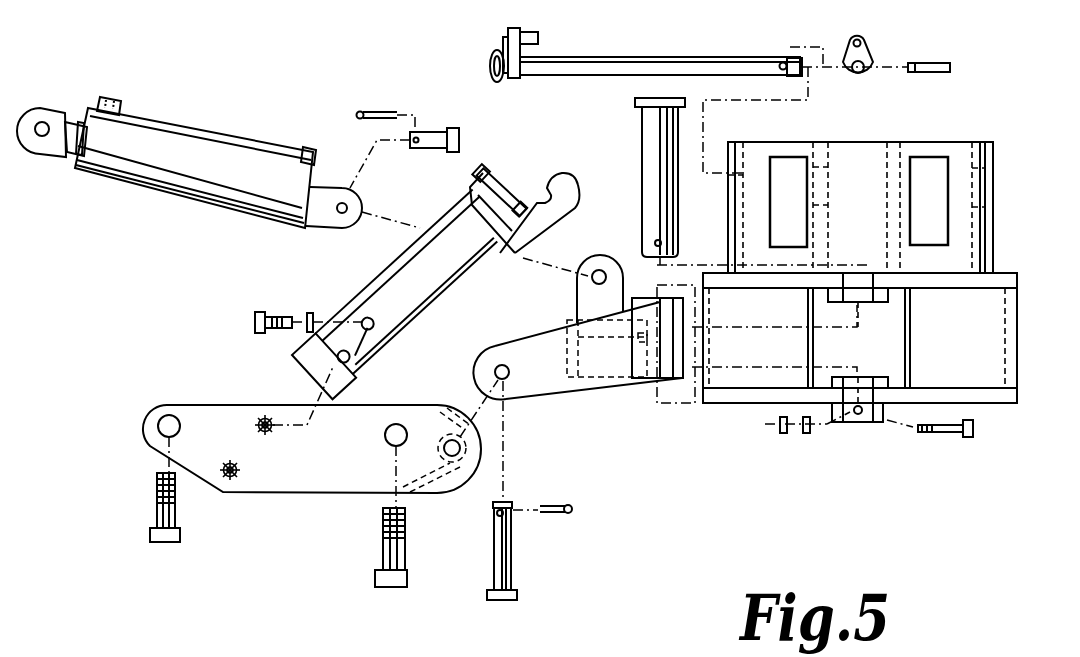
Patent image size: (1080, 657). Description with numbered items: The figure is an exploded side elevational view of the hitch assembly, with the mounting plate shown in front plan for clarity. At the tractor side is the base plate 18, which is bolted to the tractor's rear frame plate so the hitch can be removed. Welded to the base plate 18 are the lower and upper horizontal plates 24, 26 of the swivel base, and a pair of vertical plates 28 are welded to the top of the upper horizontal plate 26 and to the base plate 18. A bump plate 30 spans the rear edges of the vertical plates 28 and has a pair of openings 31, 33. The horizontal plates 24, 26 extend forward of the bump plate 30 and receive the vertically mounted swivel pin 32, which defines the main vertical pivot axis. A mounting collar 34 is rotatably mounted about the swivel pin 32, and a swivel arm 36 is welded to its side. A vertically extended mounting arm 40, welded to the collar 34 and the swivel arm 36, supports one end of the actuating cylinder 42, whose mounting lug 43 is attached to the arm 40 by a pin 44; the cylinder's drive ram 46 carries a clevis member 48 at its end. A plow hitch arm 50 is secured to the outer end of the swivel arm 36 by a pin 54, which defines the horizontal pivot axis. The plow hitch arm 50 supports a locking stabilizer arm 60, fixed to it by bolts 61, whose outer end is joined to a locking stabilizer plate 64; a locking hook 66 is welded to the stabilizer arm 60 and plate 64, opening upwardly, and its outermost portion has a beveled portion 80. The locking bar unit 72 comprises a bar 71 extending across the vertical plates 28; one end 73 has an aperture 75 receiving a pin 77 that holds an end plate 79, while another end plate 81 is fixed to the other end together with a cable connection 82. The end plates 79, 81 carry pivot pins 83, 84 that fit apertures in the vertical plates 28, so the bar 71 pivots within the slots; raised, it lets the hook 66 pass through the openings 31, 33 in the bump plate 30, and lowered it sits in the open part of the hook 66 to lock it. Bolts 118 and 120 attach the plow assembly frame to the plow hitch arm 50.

The base plate 18 is at (961, 347).
The lower horizontal plate 24 is at (1005, 397).
The upper horizontal plate 26 is at (1012, 275).
The vertical plates 28 is at (747, 152).
The bump plate 30 is at (958, 229).
The opening 31 is at (937, 243).
The swivel pin 32 is at (640, 117).
The opening 33 is at (783, 243).
The mounting collar 34 is at (681, 404).
The swivel arm 36 is at (546, 369).
The mounting arm 40 is at (583, 290).
The actuating cylinder 42 is at (203, 164).
The mounting lug 43 is at (336, 228).
The pin 44 is at (440, 134).
The drive ram 46 is at (78, 119).
The clevis member 48 is at (63, 122).
The plow hitch arm 50 is at (328, 471).
The pin 54 is at (495, 560).
The locking stabilizer arm 60 is at (428, 289).
The bolts 61 is at (272, 312).
The locking stabilizer plate 64 is at (500, 152).
The locking hook 66 is at (528, 241).
The bar 71 is at (622, 57).
The locking bar unit 72 is at (683, 53).
The end 73 is at (780, 52).
The aperture 75 is at (783, 55).
The pin 77 is at (920, 63).
The end plate 79 is at (865, 50).
The beveled portion 80 is at (562, 175).
The end plate 81 is at (517, 78).
The cable connection 82 is at (492, 60).
The pivot pin 83 is at (853, 37).
The pivot pin 84 is at (532, 30).
The bolt 118 is at (383, 544).
The bolt 120 is at (178, 536).